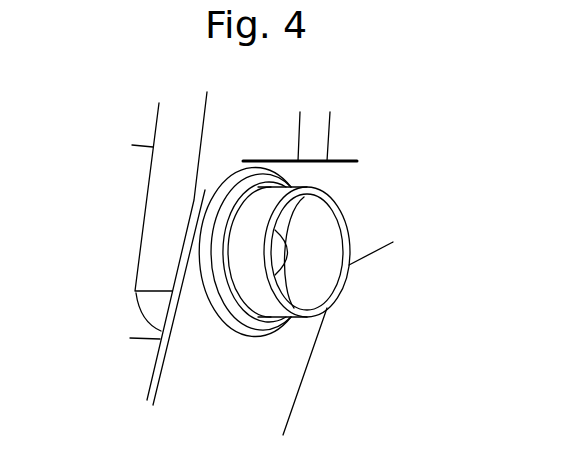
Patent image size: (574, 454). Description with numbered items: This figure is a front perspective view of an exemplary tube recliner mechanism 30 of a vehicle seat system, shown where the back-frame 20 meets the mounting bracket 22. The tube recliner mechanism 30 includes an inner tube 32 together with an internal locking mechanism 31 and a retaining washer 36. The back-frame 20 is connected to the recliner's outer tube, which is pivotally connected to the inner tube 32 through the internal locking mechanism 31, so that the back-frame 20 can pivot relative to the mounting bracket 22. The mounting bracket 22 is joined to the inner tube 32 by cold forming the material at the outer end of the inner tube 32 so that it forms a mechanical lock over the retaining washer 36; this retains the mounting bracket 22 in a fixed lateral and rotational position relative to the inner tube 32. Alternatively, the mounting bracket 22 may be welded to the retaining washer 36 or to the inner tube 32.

The back-frame 20 is at (157, 216).
The mounting bracket 22 is at (288, 385).
The tube recliner mechanism 30 is at (311, 238).
The internal locking mechanism 31 is at (283, 252).
The inner tube 32 is at (327, 230).
The retaining washer 36 is at (268, 178).